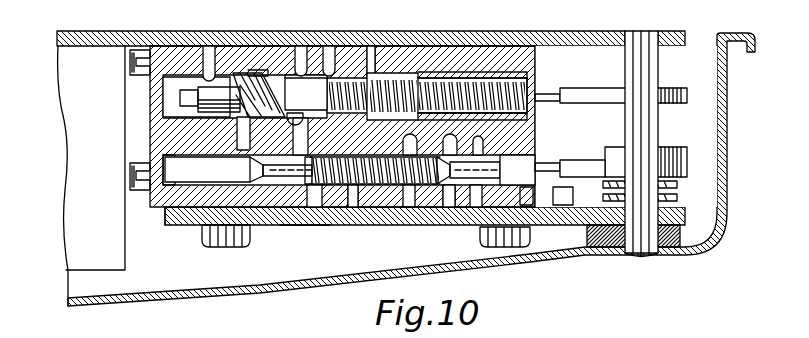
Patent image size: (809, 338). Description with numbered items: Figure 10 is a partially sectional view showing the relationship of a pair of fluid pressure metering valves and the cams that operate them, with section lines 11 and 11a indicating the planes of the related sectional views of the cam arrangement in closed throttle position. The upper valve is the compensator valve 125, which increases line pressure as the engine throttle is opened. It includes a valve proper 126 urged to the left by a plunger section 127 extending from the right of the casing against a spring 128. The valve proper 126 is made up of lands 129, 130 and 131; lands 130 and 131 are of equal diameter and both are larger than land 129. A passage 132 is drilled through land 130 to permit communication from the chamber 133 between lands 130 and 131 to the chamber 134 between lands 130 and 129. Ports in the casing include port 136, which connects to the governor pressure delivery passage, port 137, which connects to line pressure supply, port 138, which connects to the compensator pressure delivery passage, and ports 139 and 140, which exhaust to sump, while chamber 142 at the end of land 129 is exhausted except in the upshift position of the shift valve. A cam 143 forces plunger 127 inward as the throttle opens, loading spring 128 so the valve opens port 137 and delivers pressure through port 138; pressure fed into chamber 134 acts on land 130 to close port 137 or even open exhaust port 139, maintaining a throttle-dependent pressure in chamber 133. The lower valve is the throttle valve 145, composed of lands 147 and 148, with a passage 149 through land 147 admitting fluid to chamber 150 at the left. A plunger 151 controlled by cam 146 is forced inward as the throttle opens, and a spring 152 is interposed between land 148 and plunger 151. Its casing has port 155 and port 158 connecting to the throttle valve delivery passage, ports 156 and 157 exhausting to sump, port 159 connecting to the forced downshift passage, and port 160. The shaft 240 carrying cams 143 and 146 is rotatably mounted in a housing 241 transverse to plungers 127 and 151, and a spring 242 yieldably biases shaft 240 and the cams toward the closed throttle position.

The section line 11 is at (43, 192).
The section line 11a is at (43, 115).
The compensator valve 125 is at (310, 80).
The valve proper 126 is at (374, 90).
The plunger section 127 is at (545, 92).
The spring 128 is at (447, 80).
The land 129 is at (182, 93).
The land 130 is at (338, 75).
The land 131 is at (196, 97).
The passage 132 is at (262, 63).
The chamber 133 is at (306, 92).
The chamber 134 is at (232, 45).
The port 136 is at (205, 121).
The port 137 is at (258, 70).
The port 138 is at (300, 72).
The exhaust port 139 is at (328, 70).
The exhaust port 140 is at (371, 95).
The chamber 142 is at (178, 108).
The cam 143 is at (592, 88).
The throttle valve 145 is at (273, 187).
The cam 146 is at (592, 160).
The land 147 is at (190, 193).
The land 148 is at (303, 250).
The passage 149 is at (250, 165).
The chamber 150 is at (172, 165).
The plunger 151 is at (547, 163).
The spring 152 is at (378, 186).
The port 155 is at (310, 188).
The exhaust port 156 is at (318, 190).
The exhaust port 157 is at (352, 207).
The port 158 is at (408, 207).
The port 159 is at (448, 186).
The port 160 is at (470, 207).
The shaft 240 is at (630, 57).
The housing 241 is at (218, 228).
The spring 242 is at (665, 196).